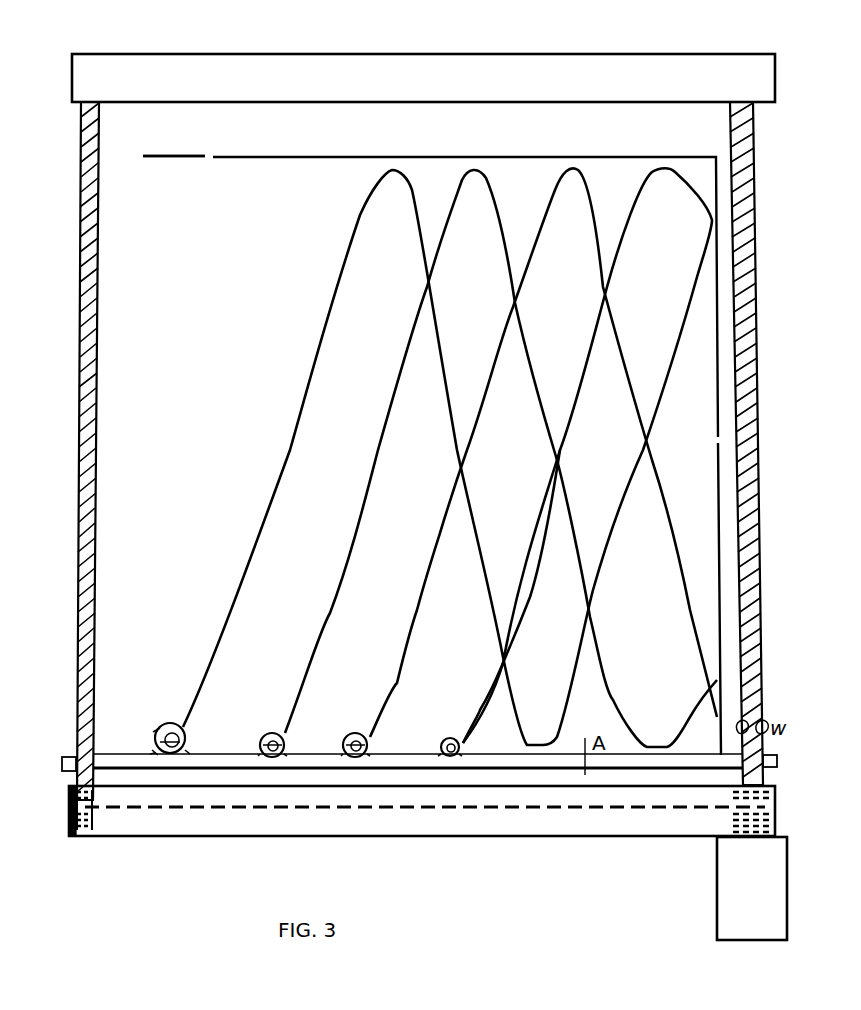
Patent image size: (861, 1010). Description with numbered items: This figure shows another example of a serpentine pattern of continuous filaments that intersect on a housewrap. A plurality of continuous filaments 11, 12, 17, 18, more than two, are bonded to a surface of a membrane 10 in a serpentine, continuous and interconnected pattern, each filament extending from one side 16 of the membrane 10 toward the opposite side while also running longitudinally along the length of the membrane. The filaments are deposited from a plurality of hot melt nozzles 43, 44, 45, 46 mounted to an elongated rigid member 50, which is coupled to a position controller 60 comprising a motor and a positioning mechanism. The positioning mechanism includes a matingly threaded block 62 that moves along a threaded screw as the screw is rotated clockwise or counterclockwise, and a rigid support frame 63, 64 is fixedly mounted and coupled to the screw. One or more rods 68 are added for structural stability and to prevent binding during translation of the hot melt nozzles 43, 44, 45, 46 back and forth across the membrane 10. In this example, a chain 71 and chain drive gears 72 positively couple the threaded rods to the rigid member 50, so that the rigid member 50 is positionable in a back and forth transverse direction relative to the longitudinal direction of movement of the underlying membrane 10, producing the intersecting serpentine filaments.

The membrane 10 is at (262, 165).
The continuous filament 11 is at (232, 616).
The continuous filament 12 is at (322, 650).
The one side 16 is at (442, 157).
The continuous filament 17 is at (403, 657).
The continuous filament 18 is at (490, 688).
The hot melt nozzle 43 is at (165, 726).
The hot melt nozzle 44 is at (268, 734).
The hot melt nozzle 45 is at (353, 735).
The hot melt nozzle 46 is at (445, 740).
The rigid member 50 is at (300, 757).
The position controller 60 is at (737, 880).
The threaded block 62 is at (70, 760).
The rigid support frame 63 is at (418, 72).
The rigid support frame 64 is at (675, 826).
The rod 68 is at (97, 395).
The chain 71 is at (590, 815).
The chain drive gears 72 is at (750, 806).